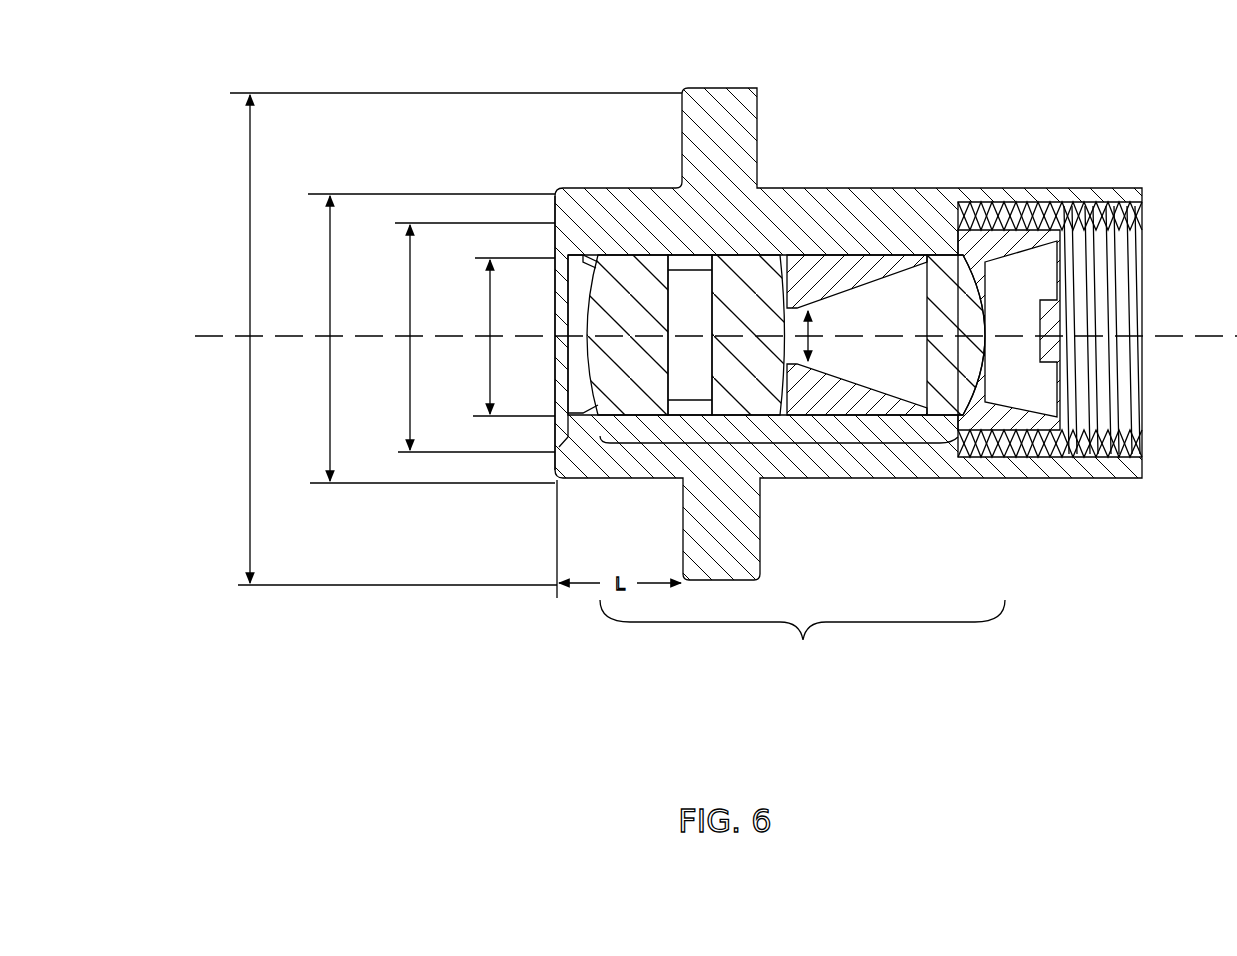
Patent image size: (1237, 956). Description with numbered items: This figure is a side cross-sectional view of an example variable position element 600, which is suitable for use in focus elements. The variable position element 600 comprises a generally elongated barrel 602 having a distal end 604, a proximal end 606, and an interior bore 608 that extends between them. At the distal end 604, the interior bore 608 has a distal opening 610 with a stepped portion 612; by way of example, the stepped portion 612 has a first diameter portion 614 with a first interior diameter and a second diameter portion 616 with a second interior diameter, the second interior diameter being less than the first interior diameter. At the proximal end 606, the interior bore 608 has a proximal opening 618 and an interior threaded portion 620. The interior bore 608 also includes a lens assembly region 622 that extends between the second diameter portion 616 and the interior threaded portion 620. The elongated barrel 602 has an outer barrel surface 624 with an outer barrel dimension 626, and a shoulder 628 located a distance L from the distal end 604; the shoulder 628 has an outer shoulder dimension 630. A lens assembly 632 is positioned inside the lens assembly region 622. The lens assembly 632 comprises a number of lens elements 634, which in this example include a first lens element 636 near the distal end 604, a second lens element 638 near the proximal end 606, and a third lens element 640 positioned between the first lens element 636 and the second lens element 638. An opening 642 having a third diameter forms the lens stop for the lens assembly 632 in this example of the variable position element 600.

The variable position element 600 is at (1080, 113).
The elongated barrel 602 is at (834, 184).
The distal end 604 is at (533, 207).
The proximal end 606 is at (1150, 194).
The interior bore 608 is at (588, 410).
The distal opening 610 is at (546, 374).
The stepped portion 612 is at (585, 263).
The first diameter portion 614 is at (469, 337).
The second diameter portion 616 is at (509, 337).
The proximal opening 618 is at (1107, 280).
The interior threaded portion 620 is at (1105, 460).
The lens assembly region 622 is at (802, 633).
The outer barrel surface 624 is at (641, 481).
The outer barrel dimension 626 is at (429, 338).
The shoulder 628 is at (716, 581).
The outer shoulder dimension 630 is at (452, 339).
The lens assembly 632 is at (776, 444).
The lens elements 634 is at (945, 288).
The first lens element 636 is at (637, 337).
The second lens element 638 is at (972, 337).
The third lens element 640 is at (757, 337).
The opening 642 is at (811, 325).